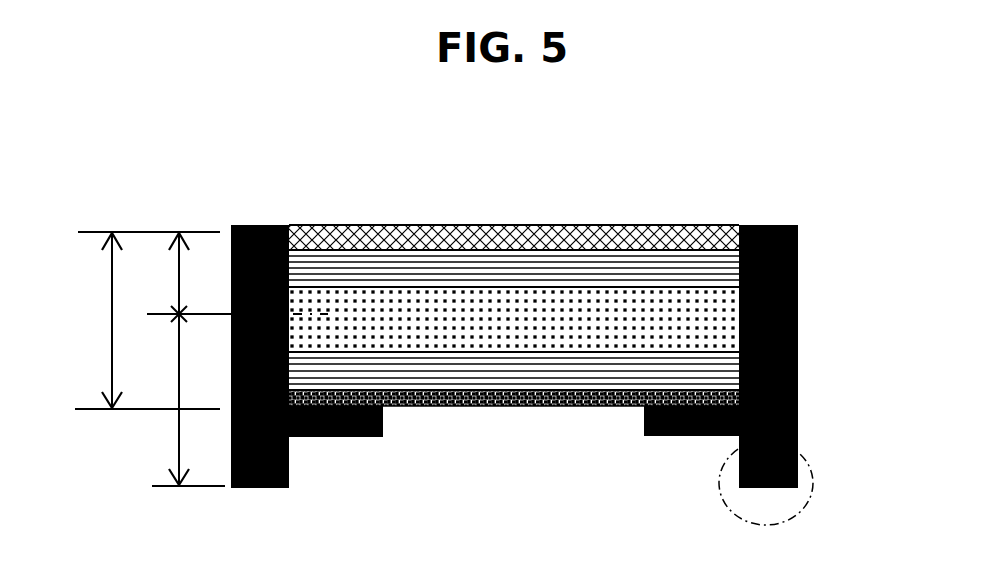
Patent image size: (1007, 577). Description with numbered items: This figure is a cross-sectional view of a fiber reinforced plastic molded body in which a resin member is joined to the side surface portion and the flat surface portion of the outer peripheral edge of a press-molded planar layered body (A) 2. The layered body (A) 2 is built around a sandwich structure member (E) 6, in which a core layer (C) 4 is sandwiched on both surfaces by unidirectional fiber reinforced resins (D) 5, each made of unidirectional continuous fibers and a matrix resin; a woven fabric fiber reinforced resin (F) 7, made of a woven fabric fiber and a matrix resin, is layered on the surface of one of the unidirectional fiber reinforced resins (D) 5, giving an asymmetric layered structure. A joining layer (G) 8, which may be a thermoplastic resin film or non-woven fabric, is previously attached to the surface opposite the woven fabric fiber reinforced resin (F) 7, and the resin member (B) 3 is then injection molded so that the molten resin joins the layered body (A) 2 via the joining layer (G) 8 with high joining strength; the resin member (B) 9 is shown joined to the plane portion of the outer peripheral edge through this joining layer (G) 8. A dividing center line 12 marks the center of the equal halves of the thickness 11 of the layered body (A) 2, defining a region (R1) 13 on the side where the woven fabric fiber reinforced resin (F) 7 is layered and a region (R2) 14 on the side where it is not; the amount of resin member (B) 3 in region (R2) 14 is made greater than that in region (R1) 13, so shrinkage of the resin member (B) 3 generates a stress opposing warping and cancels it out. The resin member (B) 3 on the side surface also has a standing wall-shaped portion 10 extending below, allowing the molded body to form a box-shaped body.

The layered body (A) 2 is at (587, 340).
The resin member (B) 3 is at (568, 378).
The core layer (C) 4 is at (708, 313).
The unidirectional fiber reinforced resin (D) 5 is at (702, 273).
The sandwich structure member (E) 6 is at (595, 273).
The woven fabric fiber reinforced resin (F) 7 is at (702, 236).
The joining layer (G) 8 is at (532, 407).
The resin member (B) 9 is at (657, 436).
The standing wall-shaped portion 10 is at (814, 488).
The thickness 11 is at (107, 278).
The dividing center line 12 is at (198, 307).
The region (R1) 13 is at (175, 278).
The region (R2) 14 is at (178, 440).